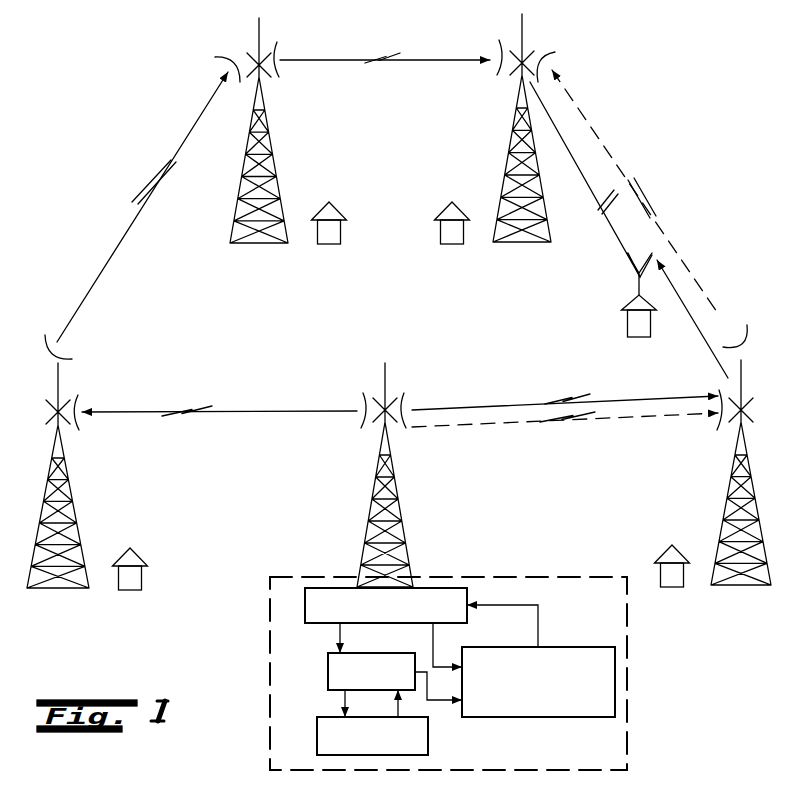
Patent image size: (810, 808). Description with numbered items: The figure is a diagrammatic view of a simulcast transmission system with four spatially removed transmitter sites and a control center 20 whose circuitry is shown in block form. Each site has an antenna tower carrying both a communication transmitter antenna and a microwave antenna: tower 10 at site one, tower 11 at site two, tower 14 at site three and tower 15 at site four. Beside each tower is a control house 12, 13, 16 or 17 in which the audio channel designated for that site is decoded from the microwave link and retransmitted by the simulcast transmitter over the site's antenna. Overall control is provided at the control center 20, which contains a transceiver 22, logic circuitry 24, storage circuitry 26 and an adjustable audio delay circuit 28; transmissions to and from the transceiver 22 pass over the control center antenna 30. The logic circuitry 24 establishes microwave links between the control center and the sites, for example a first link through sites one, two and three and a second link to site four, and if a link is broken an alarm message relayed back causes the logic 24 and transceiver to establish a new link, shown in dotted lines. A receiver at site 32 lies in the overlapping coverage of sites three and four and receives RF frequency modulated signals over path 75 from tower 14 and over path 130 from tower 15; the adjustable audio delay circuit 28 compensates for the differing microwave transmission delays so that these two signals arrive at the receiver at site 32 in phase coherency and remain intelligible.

The tower 10 is at (76, 520).
The antenna tower 11 is at (266, 115).
The control house 12 is at (140, 557).
The control house 13 is at (338, 211).
The antenna tower 14 is at (512, 133).
The antenna tower 15 is at (727, 498).
The control house 16 is at (456, 206).
The control house 17 is at (673, 548).
The control center 20 is at (495, 576).
The transceiver 22 is at (318, 625).
The logic circuitry 24 is at (328, 671).
The storage circuitry 26 is at (325, 719).
The adjustable audio delay circuit 28 is at (570, 647).
The control center antenna 30 is at (399, 500).
The receiver site 32 is at (628, 331).
The RF frequency modulated signal 75 is at (607, 203).
The path 130 is at (700, 330).